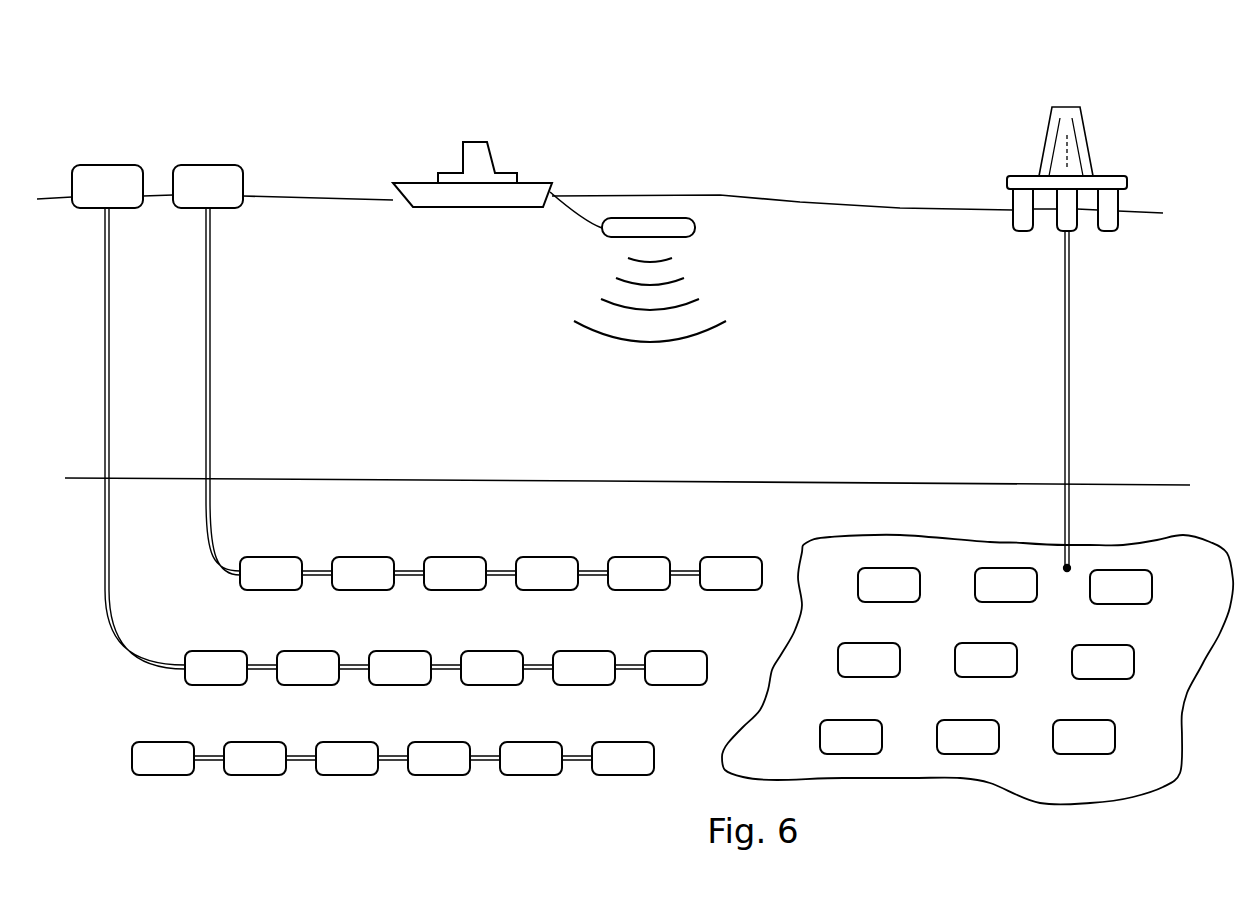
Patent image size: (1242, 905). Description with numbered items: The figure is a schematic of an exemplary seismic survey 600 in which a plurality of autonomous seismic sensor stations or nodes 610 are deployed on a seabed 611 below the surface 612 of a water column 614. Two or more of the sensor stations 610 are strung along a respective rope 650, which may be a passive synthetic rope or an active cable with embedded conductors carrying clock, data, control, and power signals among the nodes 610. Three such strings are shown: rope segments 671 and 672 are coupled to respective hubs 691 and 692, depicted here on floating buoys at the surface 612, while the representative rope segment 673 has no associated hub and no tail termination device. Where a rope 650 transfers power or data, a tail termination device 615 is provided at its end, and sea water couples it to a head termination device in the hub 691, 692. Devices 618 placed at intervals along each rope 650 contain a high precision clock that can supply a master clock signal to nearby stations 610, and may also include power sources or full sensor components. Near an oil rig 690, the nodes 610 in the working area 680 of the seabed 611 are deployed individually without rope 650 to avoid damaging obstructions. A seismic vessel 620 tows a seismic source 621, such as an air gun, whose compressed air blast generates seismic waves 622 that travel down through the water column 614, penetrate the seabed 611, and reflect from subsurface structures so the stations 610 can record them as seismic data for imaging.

The seismic survey 600 is at (243, 73).
The seismic sensor station 610 is at (642, 666).
The seabed 611 is at (115, 695).
The surface 612 is at (843, 200).
The water column 614 is at (350, 300).
The tail termination device 615 is at (703, 621).
The clock device 618 is at (419, 666).
The seismic vessel 620 is at (510, 153).
The seismic source 621 is at (682, 218).
The seismic waves 622 is at (725, 293).
The rope 650 is at (316, 573).
The rope segment 671 is at (683, 560).
The rope segment 672 is at (627, 655).
The rope segment 673 is at (578, 750).
The working area 680 is at (1203, 583).
The oil rig 690 is at (1118, 152).
The hub 691 is at (128, 417).
The hub 692 is at (208, 370).